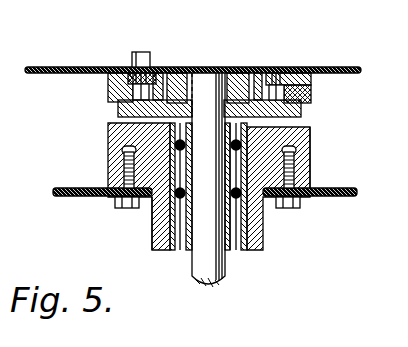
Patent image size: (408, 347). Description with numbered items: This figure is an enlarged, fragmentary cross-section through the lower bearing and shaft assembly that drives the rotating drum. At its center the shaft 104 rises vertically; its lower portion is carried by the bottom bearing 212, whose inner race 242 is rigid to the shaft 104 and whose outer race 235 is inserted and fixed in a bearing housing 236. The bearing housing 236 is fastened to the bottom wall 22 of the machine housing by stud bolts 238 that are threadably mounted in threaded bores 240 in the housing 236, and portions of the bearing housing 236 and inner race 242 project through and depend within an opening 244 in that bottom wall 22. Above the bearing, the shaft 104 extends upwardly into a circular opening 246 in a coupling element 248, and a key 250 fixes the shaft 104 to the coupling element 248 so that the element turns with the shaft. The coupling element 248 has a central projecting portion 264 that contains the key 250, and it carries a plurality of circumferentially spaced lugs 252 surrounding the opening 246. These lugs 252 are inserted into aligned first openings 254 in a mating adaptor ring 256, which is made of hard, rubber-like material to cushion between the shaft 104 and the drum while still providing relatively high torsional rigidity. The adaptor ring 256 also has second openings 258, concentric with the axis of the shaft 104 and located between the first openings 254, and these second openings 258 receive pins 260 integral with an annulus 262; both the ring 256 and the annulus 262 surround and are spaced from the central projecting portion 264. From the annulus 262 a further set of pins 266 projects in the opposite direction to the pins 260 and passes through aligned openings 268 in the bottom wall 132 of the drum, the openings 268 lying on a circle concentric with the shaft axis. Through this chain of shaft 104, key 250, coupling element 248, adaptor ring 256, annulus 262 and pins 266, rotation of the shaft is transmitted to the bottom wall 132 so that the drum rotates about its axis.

The bottom wall 22 is at (350, 197).
The shaft 104 is at (212, 284).
The bottom wall 132 is at (341, 68).
The bottom bearing 212 is at (272, 228).
The outer race 235 is at (258, 160).
The bearing housing 236 is at (311, 127).
The stud bolts 238 is at (127, 208).
The threaded bores 240 is at (122, 150).
The inner race 242 is at (232, 250).
The opening 244 is at (155, 222).
The circular opening 246 is at (232, 72).
The coupling element 248 is at (303, 112).
The key 250 is at (192, 72).
The lugs 252 is at (276, 73).
The first openings 254 is at (286, 72).
The adaptor ring 256 is at (312, 90).
The second openings 258 is at (118, 112).
The pins 260 is at (120, 73).
The annulus 262 is at (115, 80).
The central projecting portion 264 is at (240, 73).
The pins 266 is at (148, 60).
The openings 268 is at (134, 60).